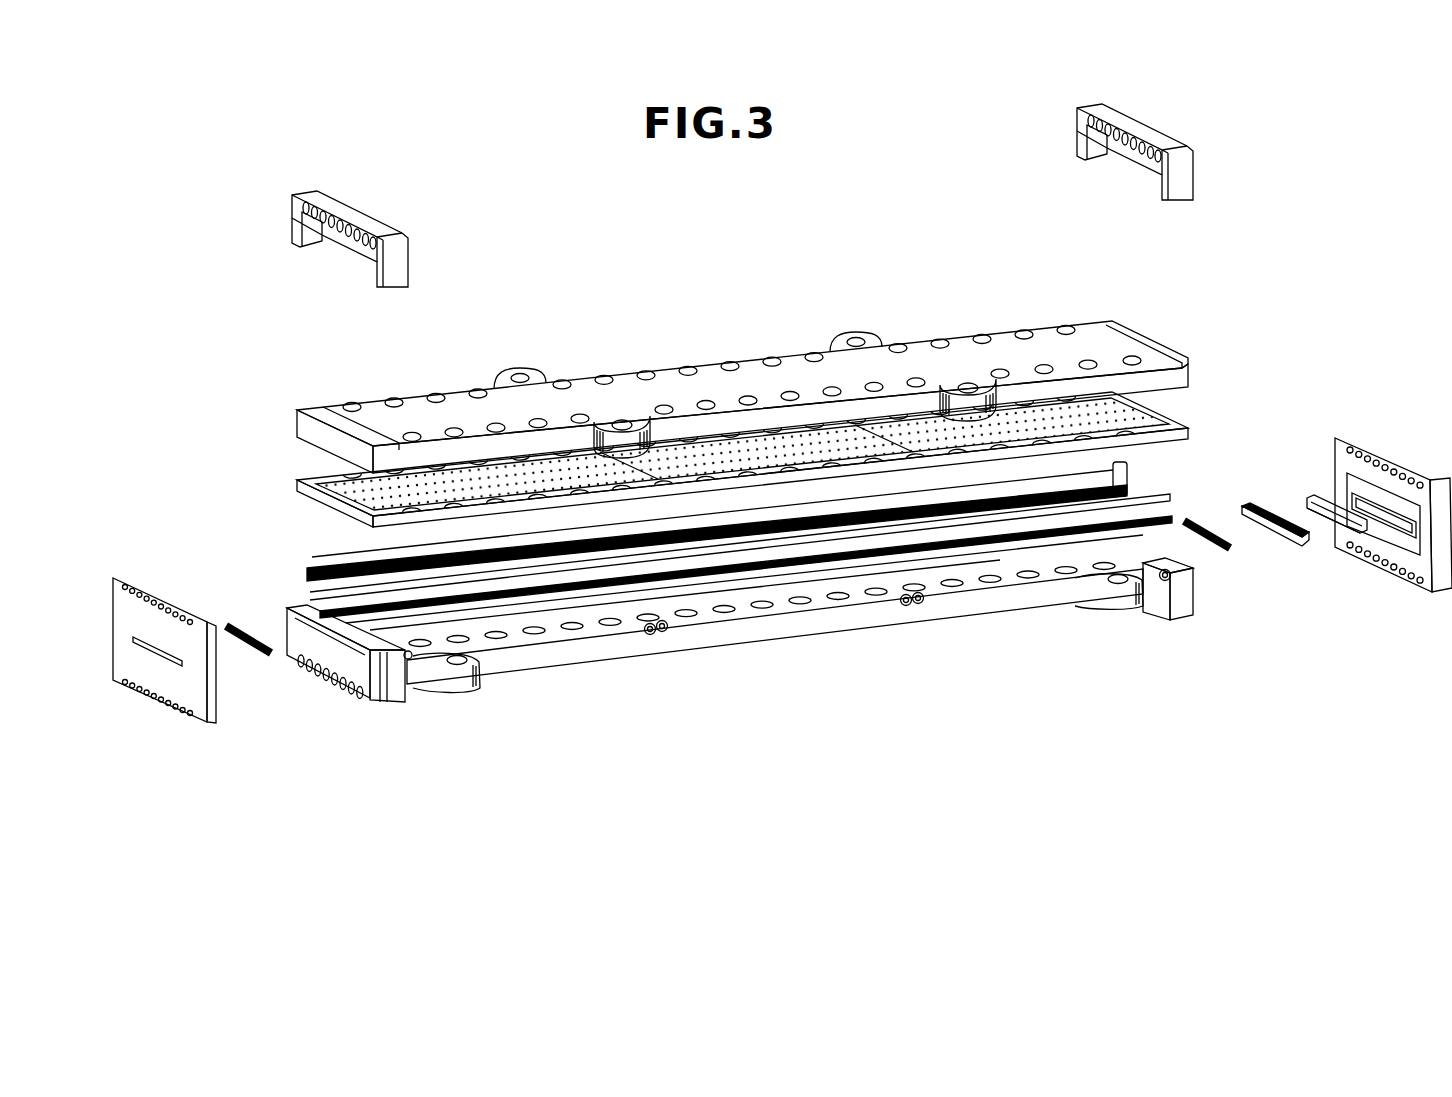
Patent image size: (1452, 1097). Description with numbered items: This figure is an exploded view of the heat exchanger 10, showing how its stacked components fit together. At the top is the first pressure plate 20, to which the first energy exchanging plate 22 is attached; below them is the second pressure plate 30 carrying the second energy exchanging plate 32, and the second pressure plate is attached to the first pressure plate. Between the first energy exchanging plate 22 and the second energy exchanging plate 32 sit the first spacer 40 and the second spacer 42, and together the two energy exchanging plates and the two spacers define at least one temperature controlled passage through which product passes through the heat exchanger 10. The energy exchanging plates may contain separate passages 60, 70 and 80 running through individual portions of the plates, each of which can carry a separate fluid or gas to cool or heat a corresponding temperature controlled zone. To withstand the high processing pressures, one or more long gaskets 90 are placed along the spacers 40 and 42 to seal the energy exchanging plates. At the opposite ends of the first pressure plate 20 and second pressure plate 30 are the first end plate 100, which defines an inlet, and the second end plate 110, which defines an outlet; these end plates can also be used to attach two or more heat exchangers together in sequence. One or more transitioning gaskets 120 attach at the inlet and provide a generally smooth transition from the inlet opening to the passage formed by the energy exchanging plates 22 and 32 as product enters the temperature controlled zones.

The heat exchanger 10 is at (574, 248).
The first pressure plate 20 is at (762, 380).
The first energy exchanging plate 22 is at (337, 497).
The second pressure plate 30 is at (822, 620).
The second energy exchanging plate 32 is at (533, 638).
The first spacer 40 is at (308, 570).
The second spacer 42 is at (389, 653).
The passage 60 is at (1160, 618).
The passage 70 is at (905, 603).
The passage 80 is at (648, 633).
The long gasket 90 is at (1162, 493).
The first end plate 100 is at (1402, 460).
The second end plate 110 is at (154, 700).
The transitioning gasket 120 is at (1313, 493).